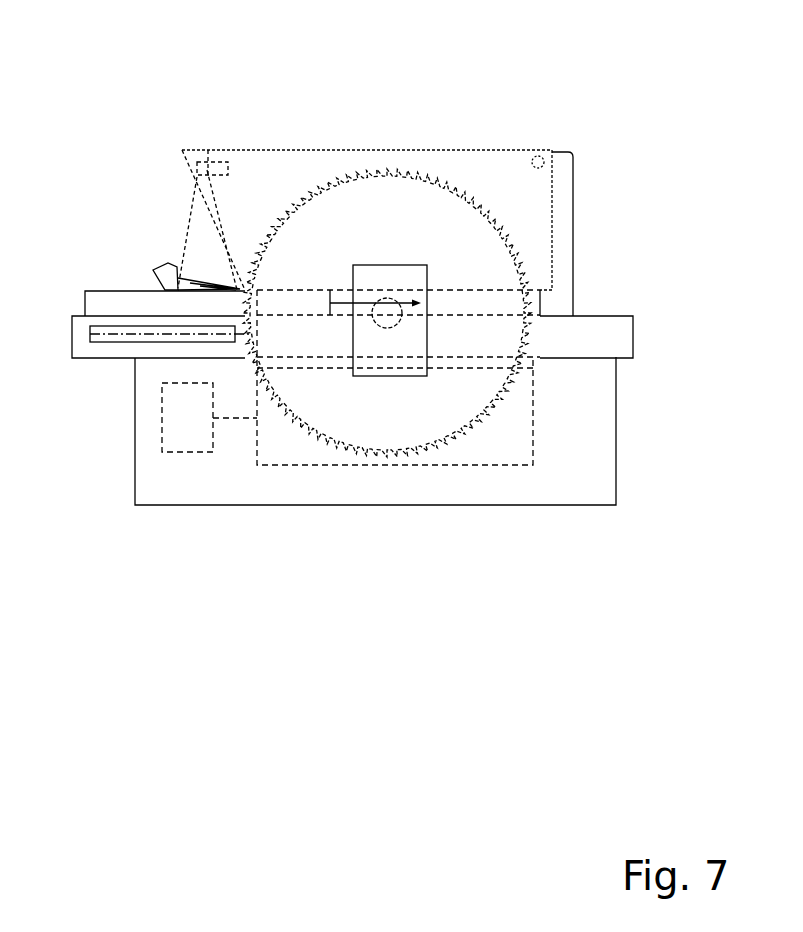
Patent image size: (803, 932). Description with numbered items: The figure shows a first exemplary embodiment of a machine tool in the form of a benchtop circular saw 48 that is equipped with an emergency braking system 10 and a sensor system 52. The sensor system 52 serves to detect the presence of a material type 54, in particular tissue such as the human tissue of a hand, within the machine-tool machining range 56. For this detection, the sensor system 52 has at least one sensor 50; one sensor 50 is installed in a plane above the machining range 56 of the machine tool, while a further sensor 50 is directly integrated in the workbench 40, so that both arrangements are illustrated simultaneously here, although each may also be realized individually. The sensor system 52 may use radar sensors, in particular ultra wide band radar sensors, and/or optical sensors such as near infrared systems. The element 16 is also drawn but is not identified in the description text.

The emergency braking system 10 is at (410, 337).
The actuator / drive unit 16 is at (380, 322).
The workbench 40 is at (590, 327).
The circular saw 48 is at (562, 98).
The sensor 50 is at (208, 148).
The sensor system 52 is at (232, 152).
The material type 54 is at (170, 266).
The machine-tool machining range 56 is at (210, 299).